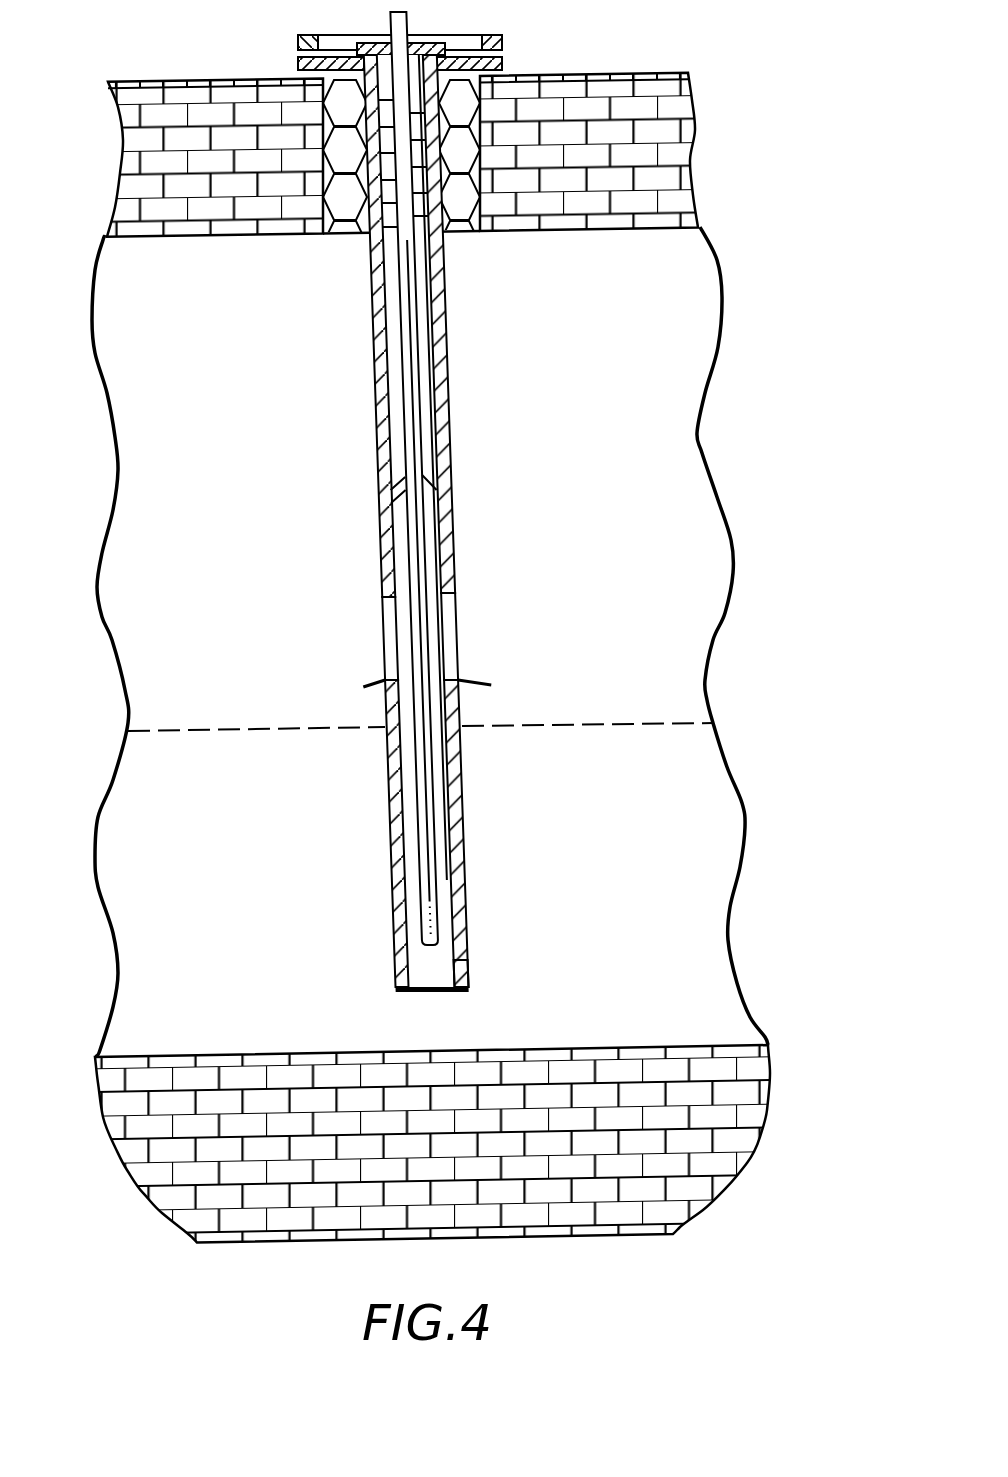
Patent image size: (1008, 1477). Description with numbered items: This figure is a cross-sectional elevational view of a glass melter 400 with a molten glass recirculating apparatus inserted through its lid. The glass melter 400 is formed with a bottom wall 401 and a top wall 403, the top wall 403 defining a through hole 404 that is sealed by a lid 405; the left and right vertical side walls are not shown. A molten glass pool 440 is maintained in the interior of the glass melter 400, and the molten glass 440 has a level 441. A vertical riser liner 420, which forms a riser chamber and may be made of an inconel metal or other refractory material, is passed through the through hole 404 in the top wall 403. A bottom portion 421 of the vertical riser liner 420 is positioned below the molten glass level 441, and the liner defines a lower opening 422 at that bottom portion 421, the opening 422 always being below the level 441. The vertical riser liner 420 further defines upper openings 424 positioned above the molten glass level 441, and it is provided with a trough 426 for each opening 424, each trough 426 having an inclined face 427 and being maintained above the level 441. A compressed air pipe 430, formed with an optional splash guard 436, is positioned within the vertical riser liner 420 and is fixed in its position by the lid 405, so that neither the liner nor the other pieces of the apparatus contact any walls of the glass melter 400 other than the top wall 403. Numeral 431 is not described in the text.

The glass melter 400 is at (795, 301).
The bottom wall 401 is at (752, 1070).
The top wall 403 is at (660, 131).
The through hole 404 is at (476, 130).
The lid 405 is at (483, 34).
The vertical riser liner 420 is at (395, 858).
The bottom portion 421 is at (398, 992).
The lower opening 422 is at (445, 991).
The upper openings 424 is at (383, 600).
The trough 426 is at (385, 689).
The inclined face 427 is at (363, 683).
The compressed air pipe 430 is at (400, 522).
The rod tip 431 is at (427, 948).
The splash guard 436 is at (437, 483).
The molten glass pool 440 is at (683, 848).
The level 441 is at (680, 718).